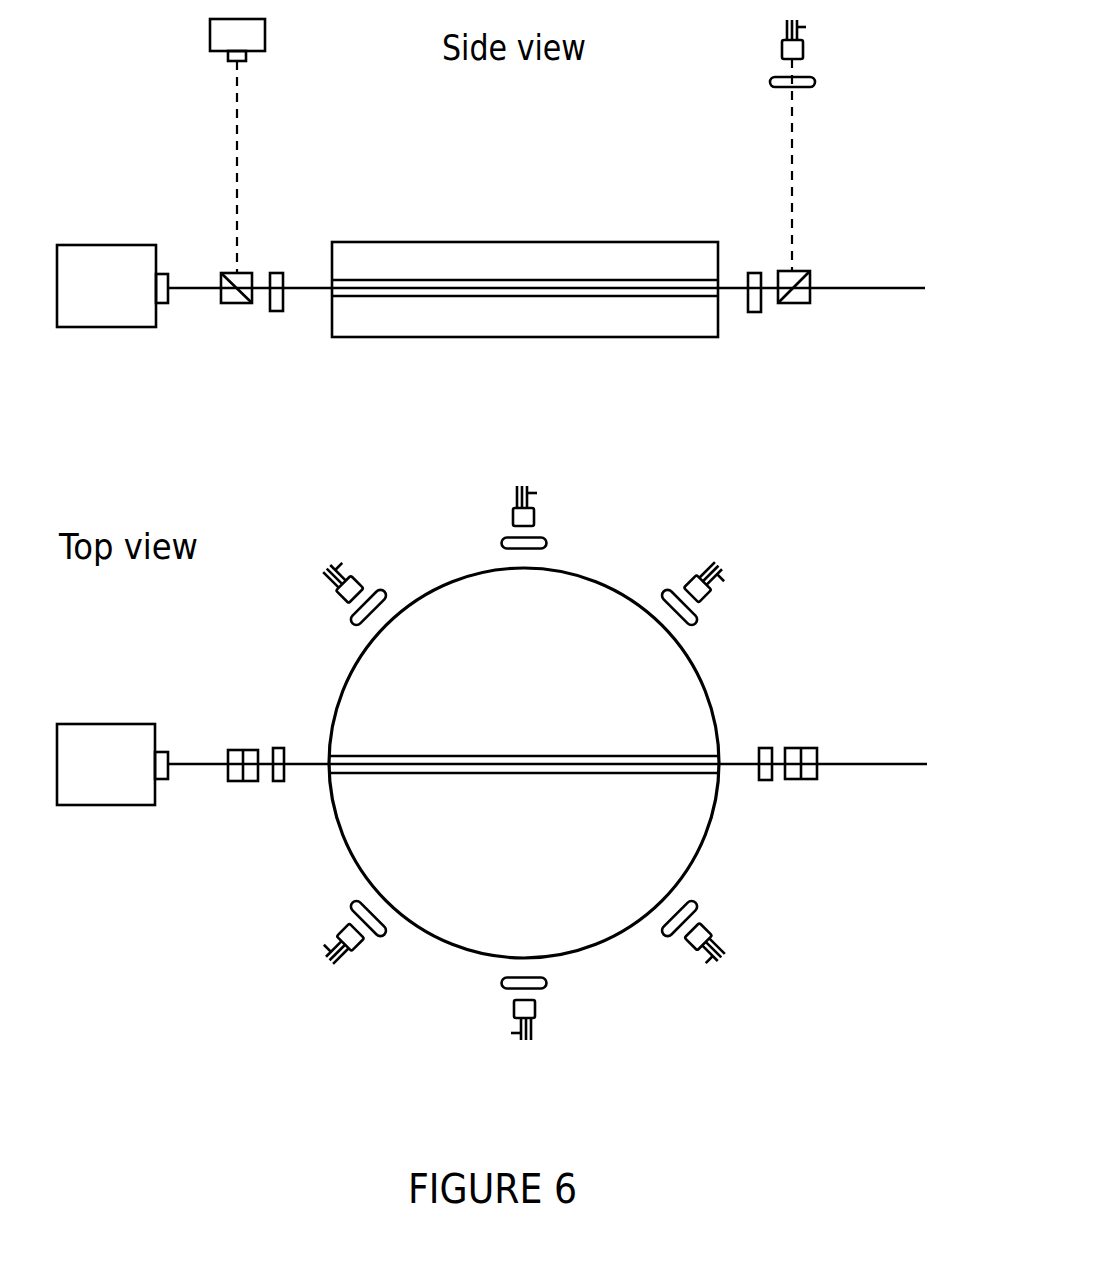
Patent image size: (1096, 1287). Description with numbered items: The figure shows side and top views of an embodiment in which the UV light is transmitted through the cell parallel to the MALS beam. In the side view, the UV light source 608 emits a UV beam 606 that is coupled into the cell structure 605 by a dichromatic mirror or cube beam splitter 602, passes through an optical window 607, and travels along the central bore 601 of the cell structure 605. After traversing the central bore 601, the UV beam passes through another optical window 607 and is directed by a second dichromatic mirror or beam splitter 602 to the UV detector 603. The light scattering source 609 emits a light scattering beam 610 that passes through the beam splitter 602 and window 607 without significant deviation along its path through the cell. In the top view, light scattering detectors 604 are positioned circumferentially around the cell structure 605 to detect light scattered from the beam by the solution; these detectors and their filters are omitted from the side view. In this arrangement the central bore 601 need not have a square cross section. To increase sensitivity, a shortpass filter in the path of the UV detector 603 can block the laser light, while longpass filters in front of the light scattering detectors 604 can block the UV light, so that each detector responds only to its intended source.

The central bore 601 is at (539, 283).
The dichromatic mirror or cube beam splitter 602 is at (237, 315).
The UV detector 603 is at (772, 91).
The light scattering detectors 604 is at (370, 590).
The cell structure 605 is at (650, 254).
The UV beam 606 is at (241, 147).
The optical window 607 is at (284, 314).
The UV light source 608 is at (201, 70).
The light scattering source 609 is at (139, 340).
The light scattering beam 610 is at (189, 285).